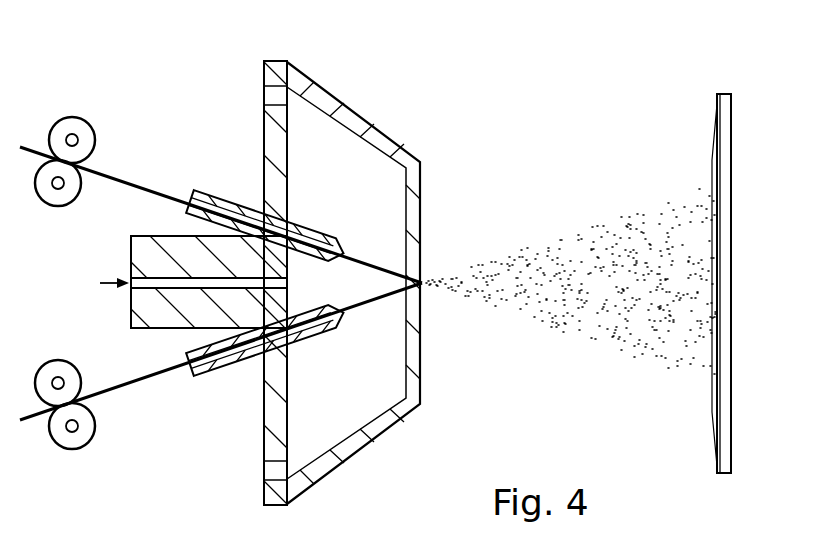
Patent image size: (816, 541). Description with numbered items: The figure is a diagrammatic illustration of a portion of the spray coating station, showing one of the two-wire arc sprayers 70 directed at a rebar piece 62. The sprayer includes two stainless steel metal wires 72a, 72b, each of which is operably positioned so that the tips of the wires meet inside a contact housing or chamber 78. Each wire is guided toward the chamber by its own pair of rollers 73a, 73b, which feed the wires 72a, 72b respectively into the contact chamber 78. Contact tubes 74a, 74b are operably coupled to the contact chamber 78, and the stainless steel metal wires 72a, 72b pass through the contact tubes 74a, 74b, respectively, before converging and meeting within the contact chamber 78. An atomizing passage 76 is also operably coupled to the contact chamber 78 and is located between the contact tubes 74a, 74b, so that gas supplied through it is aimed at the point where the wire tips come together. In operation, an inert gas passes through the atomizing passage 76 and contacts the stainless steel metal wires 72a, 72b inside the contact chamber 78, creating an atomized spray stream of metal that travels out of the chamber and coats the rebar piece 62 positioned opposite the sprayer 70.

The rebar piece 62 is at (731, 240).
The two-wire arc sprayer 70 is at (567, 67).
The stainless steel metal wire 72a is at (146, 380).
The stainless steel metal wire 72b is at (146, 189).
The pair of rollers 73a is at (72, 450).
The pair of rollers 73b is at (72, 116).
The contact tube 74a is at (318, 340).
The contact tube 74b is at (318, 231).
The atomizing passage 76 is at (158, 281).
The contact housing or chamber 78 is at (356, 113).